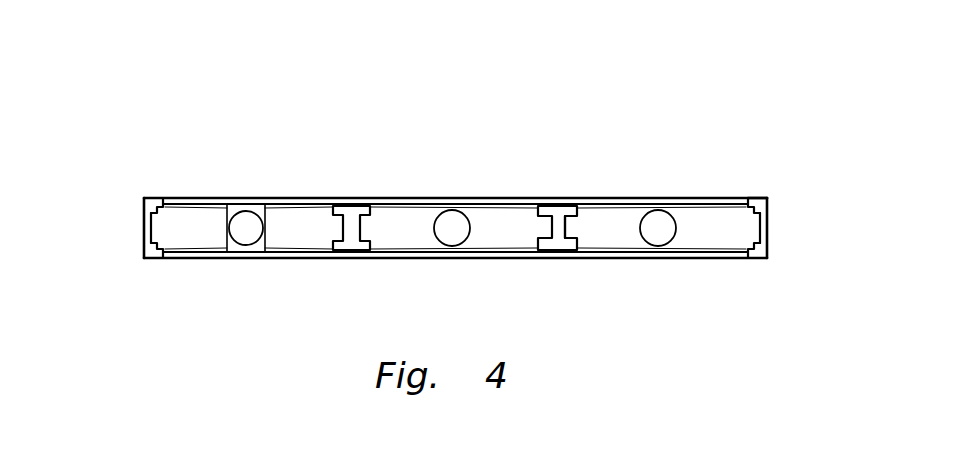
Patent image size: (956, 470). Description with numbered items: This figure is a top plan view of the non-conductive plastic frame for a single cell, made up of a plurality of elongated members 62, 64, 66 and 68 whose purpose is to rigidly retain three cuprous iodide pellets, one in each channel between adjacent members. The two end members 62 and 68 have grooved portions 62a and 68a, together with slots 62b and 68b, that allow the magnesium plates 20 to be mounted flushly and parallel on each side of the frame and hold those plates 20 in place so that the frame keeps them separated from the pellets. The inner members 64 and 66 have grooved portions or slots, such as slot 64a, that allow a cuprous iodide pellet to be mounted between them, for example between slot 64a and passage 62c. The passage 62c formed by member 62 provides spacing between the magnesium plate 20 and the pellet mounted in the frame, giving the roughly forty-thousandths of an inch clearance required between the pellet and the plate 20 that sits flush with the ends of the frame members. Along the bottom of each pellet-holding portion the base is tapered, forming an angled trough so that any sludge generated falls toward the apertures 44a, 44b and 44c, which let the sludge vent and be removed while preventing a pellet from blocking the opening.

The magnesium plate 20 is at (217, 197).
The aperture 44a is at (268, 201).
The aperture 44b is at (453, 219).
The aperture 44c is at (657, 222).
The elongated member 62 is at (768, 227).
The grooved portion 62a is at (757, 256).
The slot 62b is at (748, 207).
The passage 62c is at (770, 198).
The elongated member 64 is at (558, 217).
The slot 64a is at (565, 235).
The elongated member 66 is at (357, 208).
The elongated member 68 is at (144, 225).
The grooved portion 68a is at (162, 255).
The slot 68b is at (163, 203).